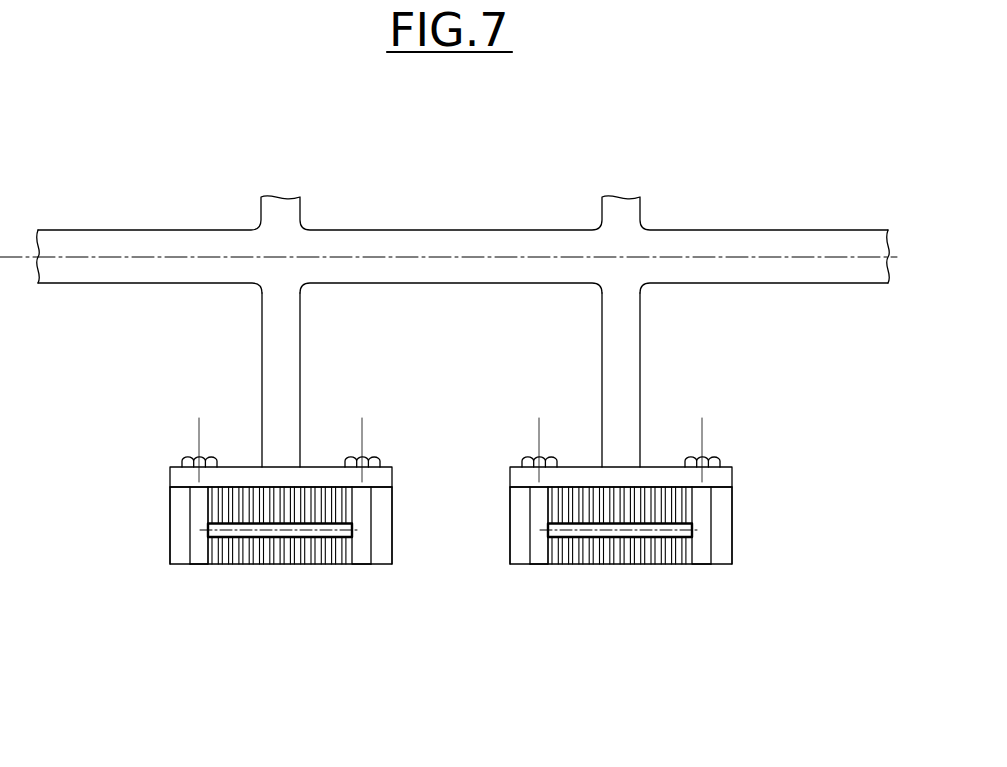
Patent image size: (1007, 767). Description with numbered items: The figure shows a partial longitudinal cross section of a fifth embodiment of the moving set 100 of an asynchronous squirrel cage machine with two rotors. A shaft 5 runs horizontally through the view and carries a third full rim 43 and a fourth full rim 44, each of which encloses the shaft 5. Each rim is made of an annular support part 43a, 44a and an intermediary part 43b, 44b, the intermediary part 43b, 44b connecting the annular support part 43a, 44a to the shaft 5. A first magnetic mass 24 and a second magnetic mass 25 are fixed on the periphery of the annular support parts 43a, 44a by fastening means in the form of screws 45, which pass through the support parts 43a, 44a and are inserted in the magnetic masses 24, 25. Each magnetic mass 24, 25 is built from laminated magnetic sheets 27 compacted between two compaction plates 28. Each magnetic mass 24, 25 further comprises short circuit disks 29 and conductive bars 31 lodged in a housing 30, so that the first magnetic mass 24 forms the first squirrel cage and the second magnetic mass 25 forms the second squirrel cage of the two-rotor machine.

The moving set 100 is at (698, 192).
The shaft 5 is at (353, 240).
The third full rim 43 is at (248, 393).
The annular support part 43a is at (170, 477).
The intermediary part 43b is at (300, 315).
The fourth full rim 44 is at (654, 393).
The annular support part 44a is at (732, 477).
The intermediary part 44b is at (640, 315).
The screws 45 is at (184, 458).
The first magnetic mass 24 is at (228, 622).
The second magnetic mass 25 is at (676, 622).
The laminated magnetic sheets 27 is at (244, 557).
The compaction plates 28 is at (177, 557).
The short circuit disks 29 is at (201, 557).
The housing 30 is at (303, 540).
The conductive bars 31 is at (223, 527).